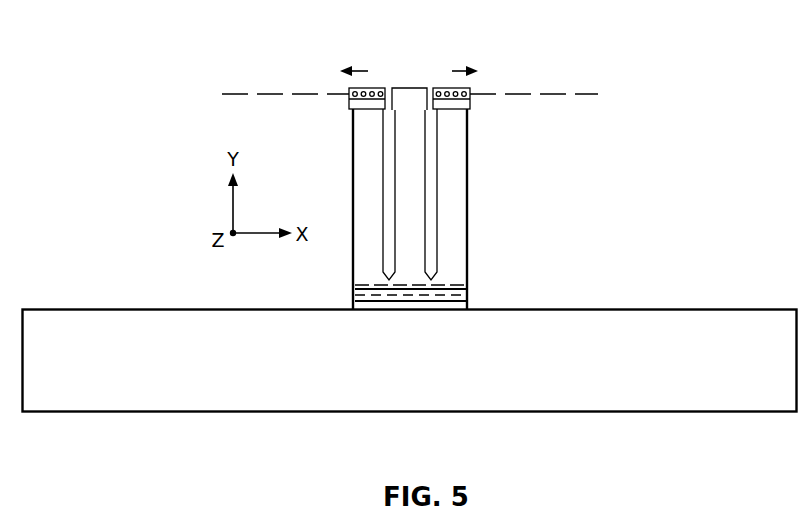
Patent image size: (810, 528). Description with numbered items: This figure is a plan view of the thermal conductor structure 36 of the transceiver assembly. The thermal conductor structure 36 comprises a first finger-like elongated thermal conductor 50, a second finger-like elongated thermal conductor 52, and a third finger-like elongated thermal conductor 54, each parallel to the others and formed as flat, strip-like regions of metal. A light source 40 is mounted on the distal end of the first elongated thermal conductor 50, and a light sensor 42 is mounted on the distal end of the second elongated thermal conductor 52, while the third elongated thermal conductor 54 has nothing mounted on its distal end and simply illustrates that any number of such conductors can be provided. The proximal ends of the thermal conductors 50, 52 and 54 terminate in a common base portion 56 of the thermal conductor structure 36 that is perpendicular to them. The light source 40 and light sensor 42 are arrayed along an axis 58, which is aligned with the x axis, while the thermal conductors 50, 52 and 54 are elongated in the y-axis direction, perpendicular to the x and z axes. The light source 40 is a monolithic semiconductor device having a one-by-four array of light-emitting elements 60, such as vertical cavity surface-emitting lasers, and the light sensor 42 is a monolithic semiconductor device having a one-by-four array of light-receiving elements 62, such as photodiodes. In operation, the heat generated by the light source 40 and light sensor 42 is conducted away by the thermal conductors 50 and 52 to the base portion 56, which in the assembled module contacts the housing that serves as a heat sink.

The thermal conductor structure 36 is at (606, 148).
The light source 40 is at (380, 88).
The light sensor 42 is at (443, 88).
The first elongated thermal conductor 50 is at (353, 166).
The second elongated thermal conductor 52 is at (468, 253).
The third elongated thermal conductor 54 is at (425, 207).
The base portion 56 is at (274, 411).
The axis 58 is at (269, 94).
The light-emitting elements 60 is at (349, 92).
The light-receiving elements 62 is at (472, 94).